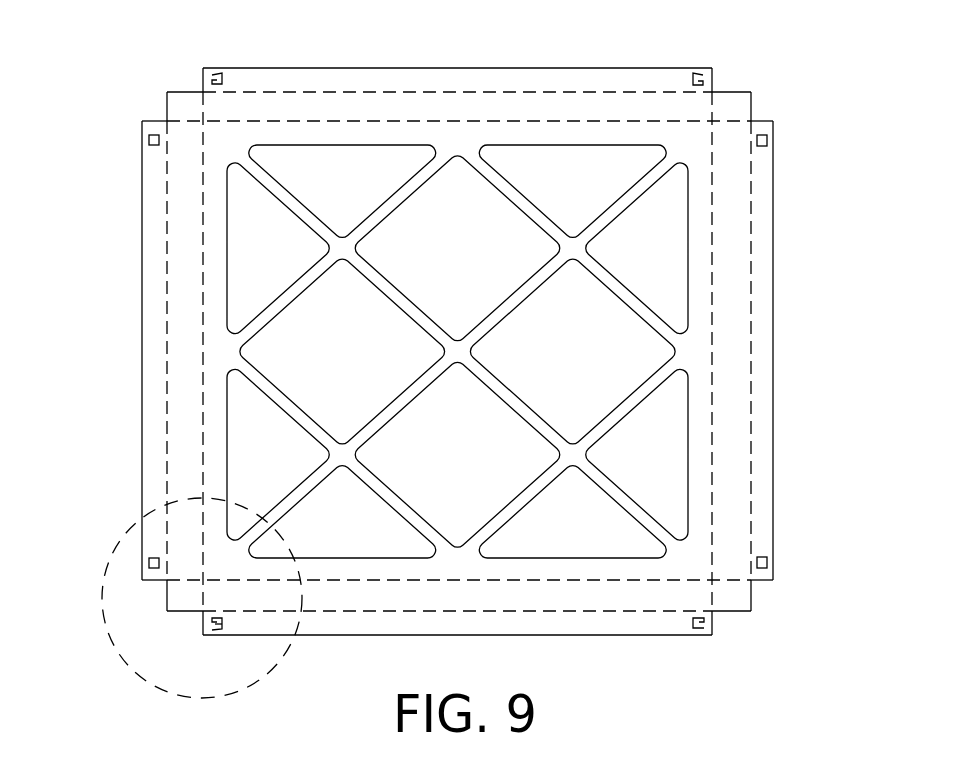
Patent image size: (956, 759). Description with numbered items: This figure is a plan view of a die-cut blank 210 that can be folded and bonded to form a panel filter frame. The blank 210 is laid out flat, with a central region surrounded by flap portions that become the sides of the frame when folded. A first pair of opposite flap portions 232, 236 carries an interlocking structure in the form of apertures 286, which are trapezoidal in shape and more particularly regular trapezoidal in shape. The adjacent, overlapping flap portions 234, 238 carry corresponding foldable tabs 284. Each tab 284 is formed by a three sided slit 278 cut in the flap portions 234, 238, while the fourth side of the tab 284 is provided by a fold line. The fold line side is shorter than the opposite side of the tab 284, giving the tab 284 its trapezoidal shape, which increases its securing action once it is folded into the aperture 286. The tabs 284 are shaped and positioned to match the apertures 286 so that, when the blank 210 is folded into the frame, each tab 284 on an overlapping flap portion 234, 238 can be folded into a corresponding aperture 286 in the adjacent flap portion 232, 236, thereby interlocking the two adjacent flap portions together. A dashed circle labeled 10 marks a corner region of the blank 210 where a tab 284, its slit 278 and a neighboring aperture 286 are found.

The detail region 10 is at (122, 541).
The die-cut blank 210 is at (467, 362).
The flap portion 232 is at (152, 328).
The flap portion 234 is at (449, 77).
The flap portion 236 is at (773, 226).
The flap portion 238 is at (598, 628).
The three sided slit 278 is at (222, 623).
The foldable tab 284 is at (221, 76).
The aperture 286 is at (153, 146).